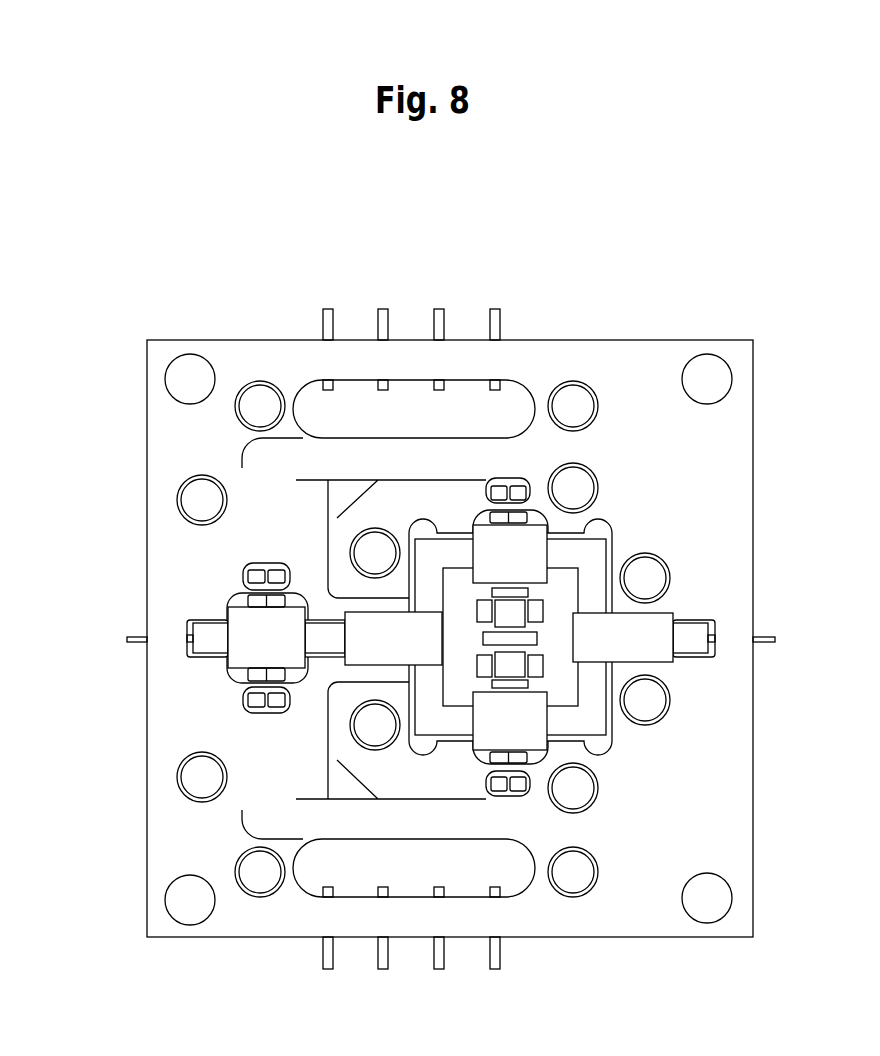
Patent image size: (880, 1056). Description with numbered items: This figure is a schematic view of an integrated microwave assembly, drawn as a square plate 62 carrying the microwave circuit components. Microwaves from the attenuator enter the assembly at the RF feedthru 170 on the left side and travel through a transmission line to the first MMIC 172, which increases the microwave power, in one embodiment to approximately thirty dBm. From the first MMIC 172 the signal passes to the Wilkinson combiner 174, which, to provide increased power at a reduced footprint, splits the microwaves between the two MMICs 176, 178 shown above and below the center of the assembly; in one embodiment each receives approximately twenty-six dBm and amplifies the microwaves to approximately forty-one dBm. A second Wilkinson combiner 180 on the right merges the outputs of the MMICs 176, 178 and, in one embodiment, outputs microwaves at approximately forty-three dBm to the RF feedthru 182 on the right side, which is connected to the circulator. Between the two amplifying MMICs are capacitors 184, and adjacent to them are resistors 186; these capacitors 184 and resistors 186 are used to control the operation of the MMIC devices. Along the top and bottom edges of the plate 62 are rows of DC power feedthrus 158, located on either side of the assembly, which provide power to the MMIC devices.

The mounting plate 62 is at (753, 835).
The DC power feedthrus 158 is at (333, 322).
The RF feedthru 170 is at (127, 645).
The first MMIC 172 is at (253, 628).
The Wilkinson combiner 174 is at (367, 650).
The MMIC 176 is at (533, 747).
The MMIC 178 is at (525, 543).
The second Wilkinson combiner 180 is at (653, 653).
The RF feedthru 182 is at (765, 632).
The capacitors 184 is at (517, 613).
The resistors 186 is at (502, 497).